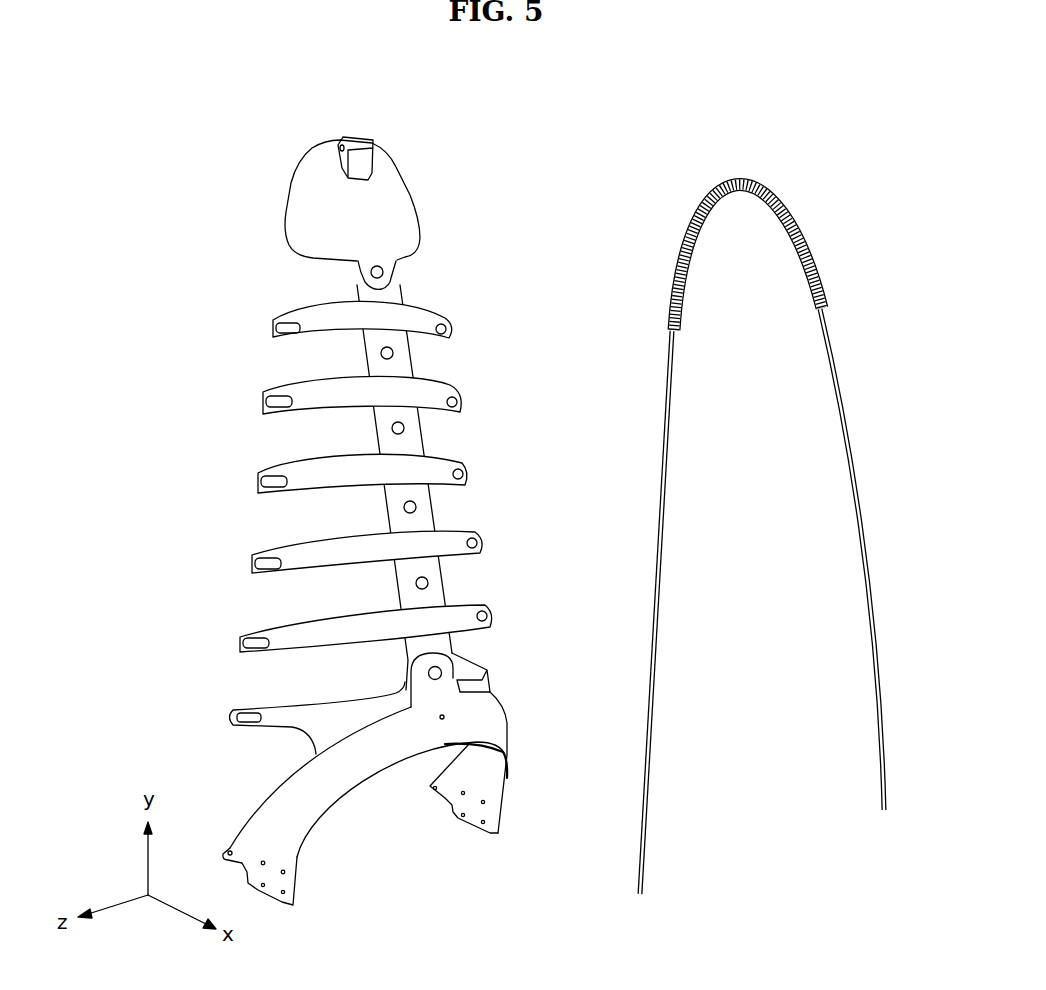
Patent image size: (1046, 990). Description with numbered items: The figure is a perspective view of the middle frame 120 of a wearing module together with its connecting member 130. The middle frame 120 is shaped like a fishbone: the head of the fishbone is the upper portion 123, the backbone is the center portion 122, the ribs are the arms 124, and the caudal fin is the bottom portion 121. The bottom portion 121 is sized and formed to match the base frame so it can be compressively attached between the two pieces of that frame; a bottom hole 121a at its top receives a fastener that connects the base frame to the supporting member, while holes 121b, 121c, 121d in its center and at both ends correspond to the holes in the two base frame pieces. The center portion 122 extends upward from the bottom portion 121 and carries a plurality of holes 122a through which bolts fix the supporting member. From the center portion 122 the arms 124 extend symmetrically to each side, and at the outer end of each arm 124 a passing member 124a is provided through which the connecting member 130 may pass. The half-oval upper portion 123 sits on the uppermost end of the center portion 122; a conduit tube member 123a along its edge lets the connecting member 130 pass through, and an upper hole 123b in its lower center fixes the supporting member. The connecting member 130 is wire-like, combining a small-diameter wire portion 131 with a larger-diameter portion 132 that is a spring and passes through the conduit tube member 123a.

The middle frame 120 is at (405, 507).
The bottom portion 121 is at (383, 770).
The bottom hole 121a is at (440, 672).
The hole 121b is at (229, 850).
The holes 121c is at (285, 872).
The hole 121d is at (441, 720).
The center portion 122 is at (456, 487).
The holes 122a is at (393, 355).
The upper portion 123 is at (400, 188).
The conduit tube member 123a is at (360, 145).
The upper hole 123b is at (382, 268).
The arm 124 is at (414, 301).
The passing member 124a is at (450, 328).
The connecting member 130 is at (788, 539).
The wire portion 131 is at (849, 482).
The portion 132 is at (802, 228).